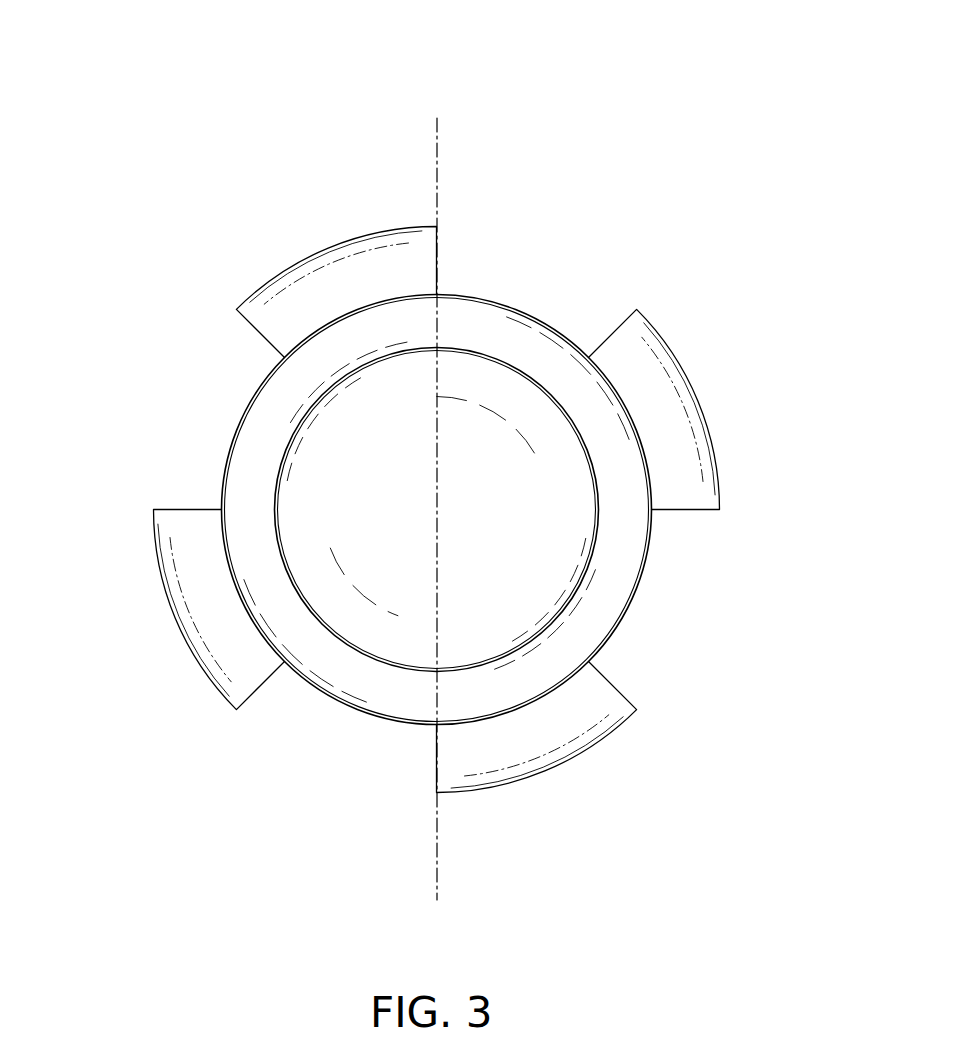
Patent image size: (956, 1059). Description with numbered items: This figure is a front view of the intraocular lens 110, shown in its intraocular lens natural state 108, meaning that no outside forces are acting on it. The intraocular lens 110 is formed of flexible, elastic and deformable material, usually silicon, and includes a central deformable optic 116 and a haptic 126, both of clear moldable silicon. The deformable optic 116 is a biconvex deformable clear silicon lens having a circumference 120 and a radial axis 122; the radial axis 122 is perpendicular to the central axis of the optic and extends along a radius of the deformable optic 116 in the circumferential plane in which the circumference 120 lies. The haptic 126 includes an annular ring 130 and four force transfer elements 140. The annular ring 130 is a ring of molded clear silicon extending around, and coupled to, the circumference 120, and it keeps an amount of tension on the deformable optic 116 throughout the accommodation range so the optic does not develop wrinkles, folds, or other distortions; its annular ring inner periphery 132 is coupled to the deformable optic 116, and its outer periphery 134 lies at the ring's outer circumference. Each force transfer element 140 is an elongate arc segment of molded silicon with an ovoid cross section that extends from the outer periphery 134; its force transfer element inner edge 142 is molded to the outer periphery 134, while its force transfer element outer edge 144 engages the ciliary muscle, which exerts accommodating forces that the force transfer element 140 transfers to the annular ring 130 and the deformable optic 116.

The intraocular lens natural state 108 is at (672, 662).
The intraocular lens 110 is at (437, 92).
The deformable optic 116 is at (497, 382).
The circumference 120 is at (294, 437).
The radial axis 122 is at (442, 178).
The haptic 126 is at (489, 281).
The annular ring 130 is at (612, 590).
The annular ring inner periphery 132 is at (378, 663).
The outer periphery 134 is at (327, 697).
The force transfer element 140 is at (330, 240).
The force transfer element inner edge 142 is at (403, 295).
The force transfer element outer edge 144 is at (262, 300).